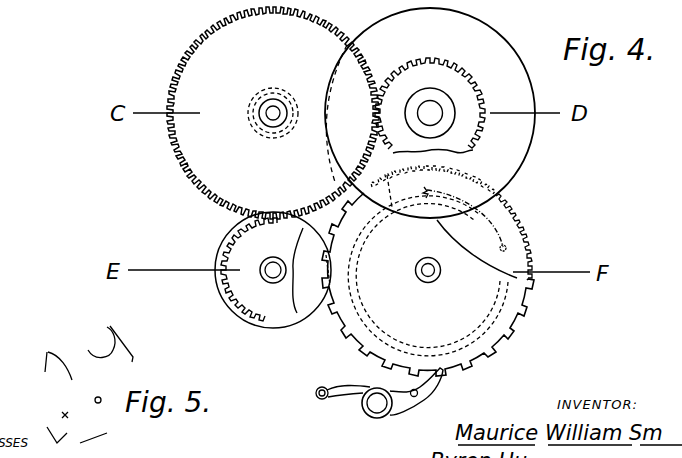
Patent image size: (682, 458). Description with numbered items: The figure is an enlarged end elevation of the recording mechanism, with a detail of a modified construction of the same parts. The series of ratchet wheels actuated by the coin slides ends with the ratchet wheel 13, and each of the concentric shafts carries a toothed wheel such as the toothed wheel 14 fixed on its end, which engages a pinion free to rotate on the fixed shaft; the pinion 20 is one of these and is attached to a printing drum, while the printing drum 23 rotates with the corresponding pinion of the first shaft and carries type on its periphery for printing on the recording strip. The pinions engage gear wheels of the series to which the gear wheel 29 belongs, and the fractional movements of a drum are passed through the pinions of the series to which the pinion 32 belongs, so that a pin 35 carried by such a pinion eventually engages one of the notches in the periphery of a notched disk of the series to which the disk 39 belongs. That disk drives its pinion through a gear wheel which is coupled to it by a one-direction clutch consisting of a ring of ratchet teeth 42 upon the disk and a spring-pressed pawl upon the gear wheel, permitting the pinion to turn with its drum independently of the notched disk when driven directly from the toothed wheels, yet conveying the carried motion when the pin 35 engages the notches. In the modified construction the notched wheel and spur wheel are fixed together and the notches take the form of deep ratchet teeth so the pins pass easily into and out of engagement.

In FIG. 4, the ratchet wheel 13 is at (466, 80).
In FIG. 4, the toothed wheel 14 is at (273, 113).
In FIG. 4, the pinion 20 is at (456, 162).
In FIG. 4, the printing drum 23 is at (532, 132).
In FIG. 4, the gear wheel 29 is at (532, 245).
In FIG. 5, the gear wheel 29 is at (100, 334).
In FIG. 4, the pinion 32 is at (273, 270).
In FIG. 4, the pin 35 is at (331, 282).
In FIG. 5, the pin 35 is at (64, 414).
In FIG. 4, the notched disk 39 is at (428, 284).
In FIG. 5, the notched disk 39 is at (107, 387).
In FIG. 4, the ring of ratchet teeth 42 is at (355, 271).